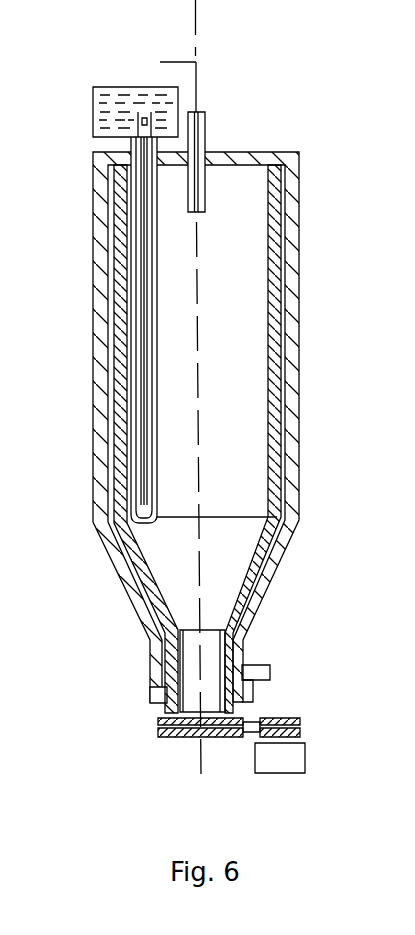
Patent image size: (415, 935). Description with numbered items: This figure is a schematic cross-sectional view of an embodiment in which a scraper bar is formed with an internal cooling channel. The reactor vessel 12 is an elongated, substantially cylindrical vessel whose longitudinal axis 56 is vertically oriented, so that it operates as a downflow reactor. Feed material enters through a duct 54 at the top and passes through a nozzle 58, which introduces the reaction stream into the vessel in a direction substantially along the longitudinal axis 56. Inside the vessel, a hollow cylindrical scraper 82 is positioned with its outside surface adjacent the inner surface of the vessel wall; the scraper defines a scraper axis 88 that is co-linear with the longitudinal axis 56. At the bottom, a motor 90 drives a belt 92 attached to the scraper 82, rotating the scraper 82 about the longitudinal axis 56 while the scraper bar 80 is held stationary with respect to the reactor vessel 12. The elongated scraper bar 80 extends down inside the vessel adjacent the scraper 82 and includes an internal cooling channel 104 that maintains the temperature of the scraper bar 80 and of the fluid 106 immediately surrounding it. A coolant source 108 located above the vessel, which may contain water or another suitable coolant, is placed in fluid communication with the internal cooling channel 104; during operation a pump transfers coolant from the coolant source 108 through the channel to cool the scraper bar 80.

The reactor vessel 12 is at (300, 353).
The duct 54 is at (178, 62).
The longitudinal axis 56 is at (196, 29).
The nozzle 58 is at (205, 117).
The scraper bar 80 is at (128, 208).
The scraper 82 is at (278, 280).
The scraper axis 88 is at (199, 498).
The motor 90 is at (277, 717).
The belt 92 is at (250, 736).
The internal cooling channel 104 is at (138, 298).
The fluid 106 is at (160, 260).
The coolant source 108 is at (145, 88).